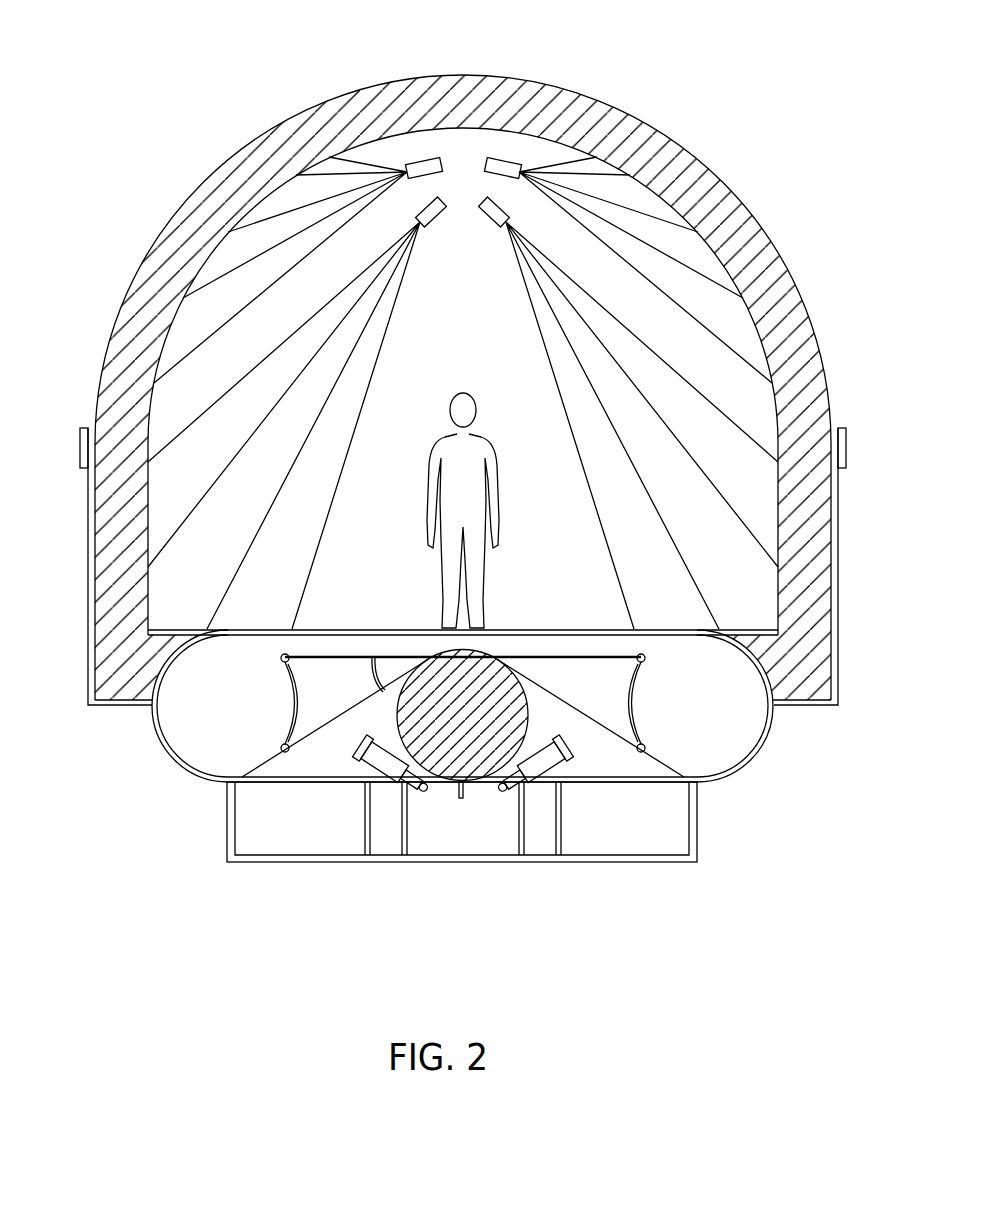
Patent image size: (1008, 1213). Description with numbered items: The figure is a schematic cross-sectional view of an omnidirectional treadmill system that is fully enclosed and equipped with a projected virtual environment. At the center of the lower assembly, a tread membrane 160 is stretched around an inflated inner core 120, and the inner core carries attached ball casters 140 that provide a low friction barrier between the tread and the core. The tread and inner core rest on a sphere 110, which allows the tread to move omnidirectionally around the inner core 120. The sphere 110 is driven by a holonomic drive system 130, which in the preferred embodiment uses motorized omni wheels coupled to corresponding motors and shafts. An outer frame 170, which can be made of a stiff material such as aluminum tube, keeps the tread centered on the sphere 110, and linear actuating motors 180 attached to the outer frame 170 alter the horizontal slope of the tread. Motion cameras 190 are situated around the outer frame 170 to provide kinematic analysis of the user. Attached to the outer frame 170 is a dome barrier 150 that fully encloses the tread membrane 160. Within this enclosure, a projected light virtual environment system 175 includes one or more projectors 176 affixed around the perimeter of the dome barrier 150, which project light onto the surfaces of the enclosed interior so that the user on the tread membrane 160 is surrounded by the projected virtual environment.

The sphere 110 is at (456, 743).
The inflated inner core 120 is at (674, 667).
The holonomic drive system 130 is at (363, 767).
The ball casters 140 is at (157, 728).
The dome barrier 150 is at (768, 237).
The tread membrane 160 is at (600, 730).
The outer frame 170 is at (772, 728).
The projected light virtual environment system 175 is at (217, 317).
The projectors 176 is at (503, 160).
The linear actuating motors 180 is at (697, 820).
The motion cameras 190 is at (90, 428).